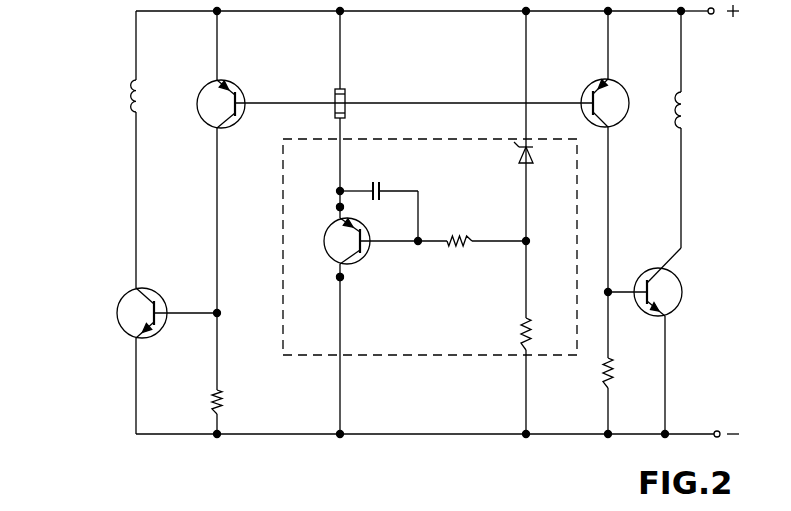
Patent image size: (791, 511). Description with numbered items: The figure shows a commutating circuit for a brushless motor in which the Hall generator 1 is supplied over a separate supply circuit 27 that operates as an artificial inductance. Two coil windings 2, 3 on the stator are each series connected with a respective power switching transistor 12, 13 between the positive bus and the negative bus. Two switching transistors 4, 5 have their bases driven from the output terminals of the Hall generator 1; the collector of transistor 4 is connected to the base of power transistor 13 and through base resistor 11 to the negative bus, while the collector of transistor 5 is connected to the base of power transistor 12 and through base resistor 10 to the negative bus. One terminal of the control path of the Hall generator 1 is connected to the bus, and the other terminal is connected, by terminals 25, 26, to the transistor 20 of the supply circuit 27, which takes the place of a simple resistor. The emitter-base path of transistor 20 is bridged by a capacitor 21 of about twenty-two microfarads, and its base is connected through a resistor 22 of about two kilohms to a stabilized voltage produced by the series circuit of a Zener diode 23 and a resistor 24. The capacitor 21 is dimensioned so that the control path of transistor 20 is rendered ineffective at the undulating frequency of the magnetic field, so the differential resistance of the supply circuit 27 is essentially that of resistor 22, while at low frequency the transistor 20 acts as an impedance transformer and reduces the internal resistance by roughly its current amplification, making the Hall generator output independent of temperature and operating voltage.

The Hall generator 1 is at (343, 107).
The coil winding 2 is at (131, 99).
The coil winding 3 is at (686, 112).
The switching transistor 4 is at (622, 110).
The switching transistor 5 is at (241, 118).
The base resistor 10 is at (222, 402).
The base resistor 11 is at (604, 377).
The power switching transistor 12 is at (118, 314).
The power switching transistor 13 is at (668, 302).
The transistor 20 is at (362, 258).
The capacitor 21 is at (377, 181).
The resistor 22 is at (462, 232).
The Zener diode 23 is at (530, 160).
The resistor 24 is at (522, 334).
The terminal 25 is at (336, 207).
The terminal 26 is at (336, 277).
The supply circuit 27 is at (376, 365).